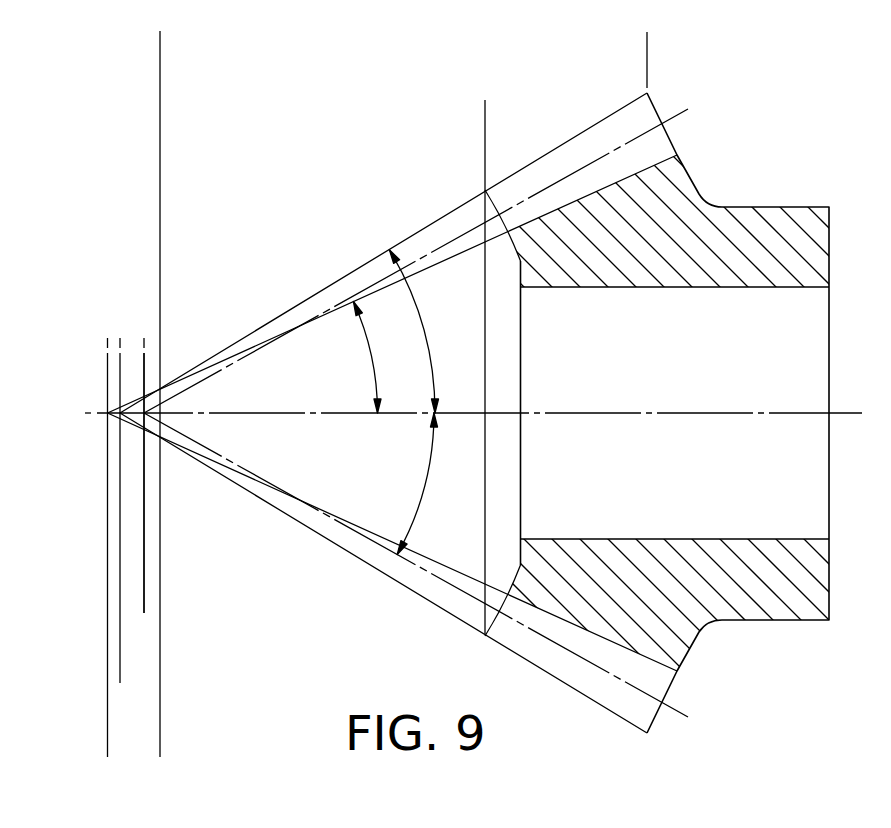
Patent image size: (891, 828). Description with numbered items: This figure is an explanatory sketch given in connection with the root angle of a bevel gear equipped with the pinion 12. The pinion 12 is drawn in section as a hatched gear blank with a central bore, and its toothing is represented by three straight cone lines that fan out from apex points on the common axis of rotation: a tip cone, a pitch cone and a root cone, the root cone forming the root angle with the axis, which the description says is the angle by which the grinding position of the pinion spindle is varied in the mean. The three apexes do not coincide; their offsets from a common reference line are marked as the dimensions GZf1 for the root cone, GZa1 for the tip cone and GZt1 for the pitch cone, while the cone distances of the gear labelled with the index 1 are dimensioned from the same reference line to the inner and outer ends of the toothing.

The pinion 12 is at (800, 254).
The pinion (index 1): outer cone distance Raur 1 and inner cone distance Rinr 1 is at (647, 40).
The root cone apex offset GZf1 is at (68, 745).
The tip cone apex offset GZa1 is at (82, 674).
The pitch cone apex offset GZt1 is at (108, 603).